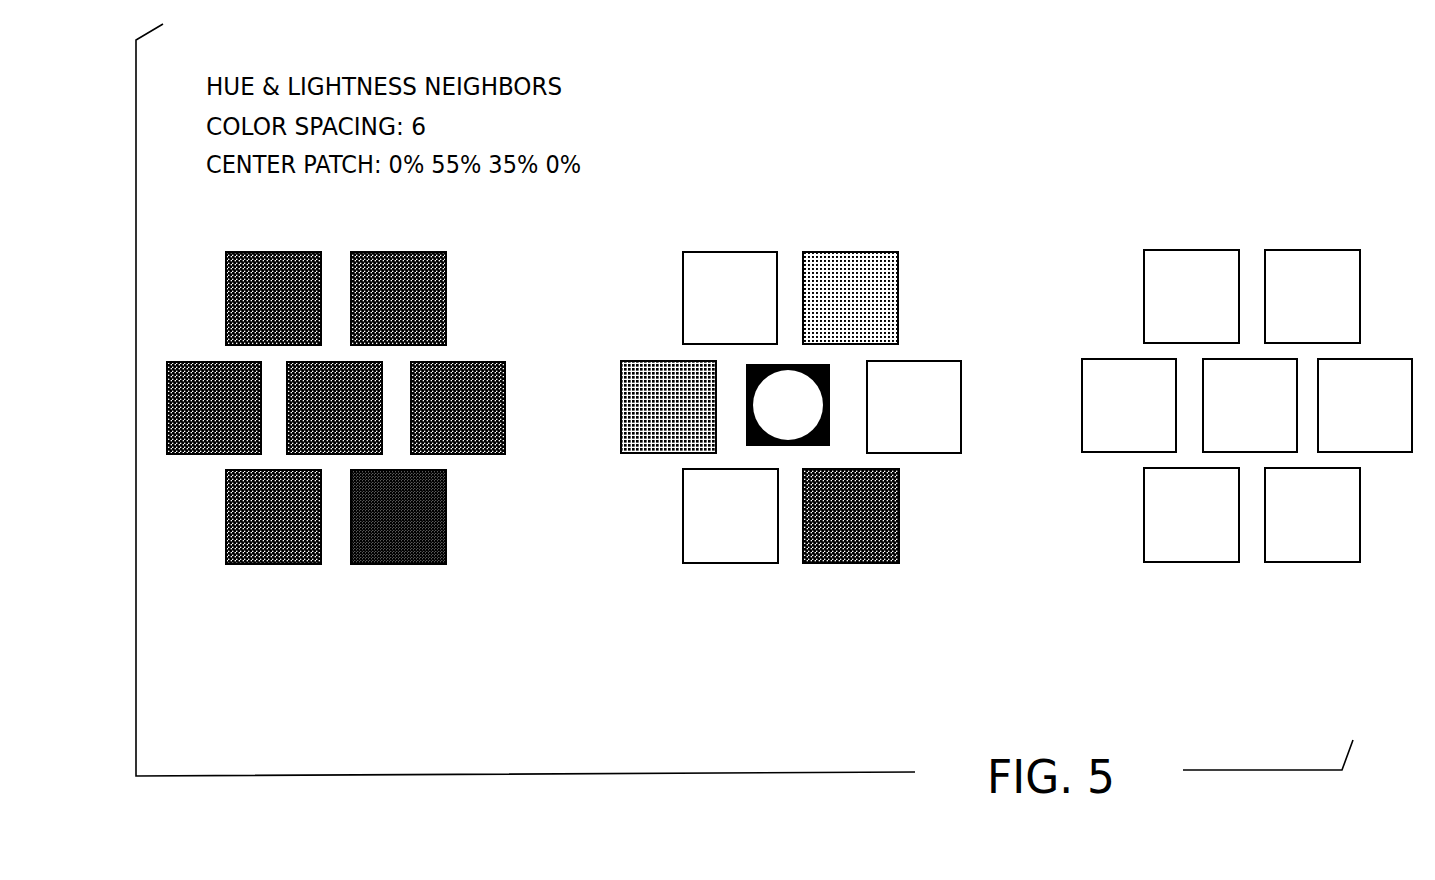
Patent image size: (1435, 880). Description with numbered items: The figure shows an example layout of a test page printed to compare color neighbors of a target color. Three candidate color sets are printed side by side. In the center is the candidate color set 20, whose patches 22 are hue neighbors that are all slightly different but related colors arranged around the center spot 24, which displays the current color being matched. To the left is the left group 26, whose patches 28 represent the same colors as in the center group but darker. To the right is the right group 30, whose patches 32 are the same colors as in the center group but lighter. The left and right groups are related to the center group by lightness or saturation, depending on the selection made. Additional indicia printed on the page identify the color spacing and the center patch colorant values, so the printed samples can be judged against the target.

The candidate color set 20 is at (797, 405).
The patches 22 is at (682, 298).
The center spot 24 is at (798, 413).
The left group 26 is at (336, 406).
The patches 28 is at (227, 301).
The right group 30 is at (1228, 404).
The patches 32 is at (1140, 290).